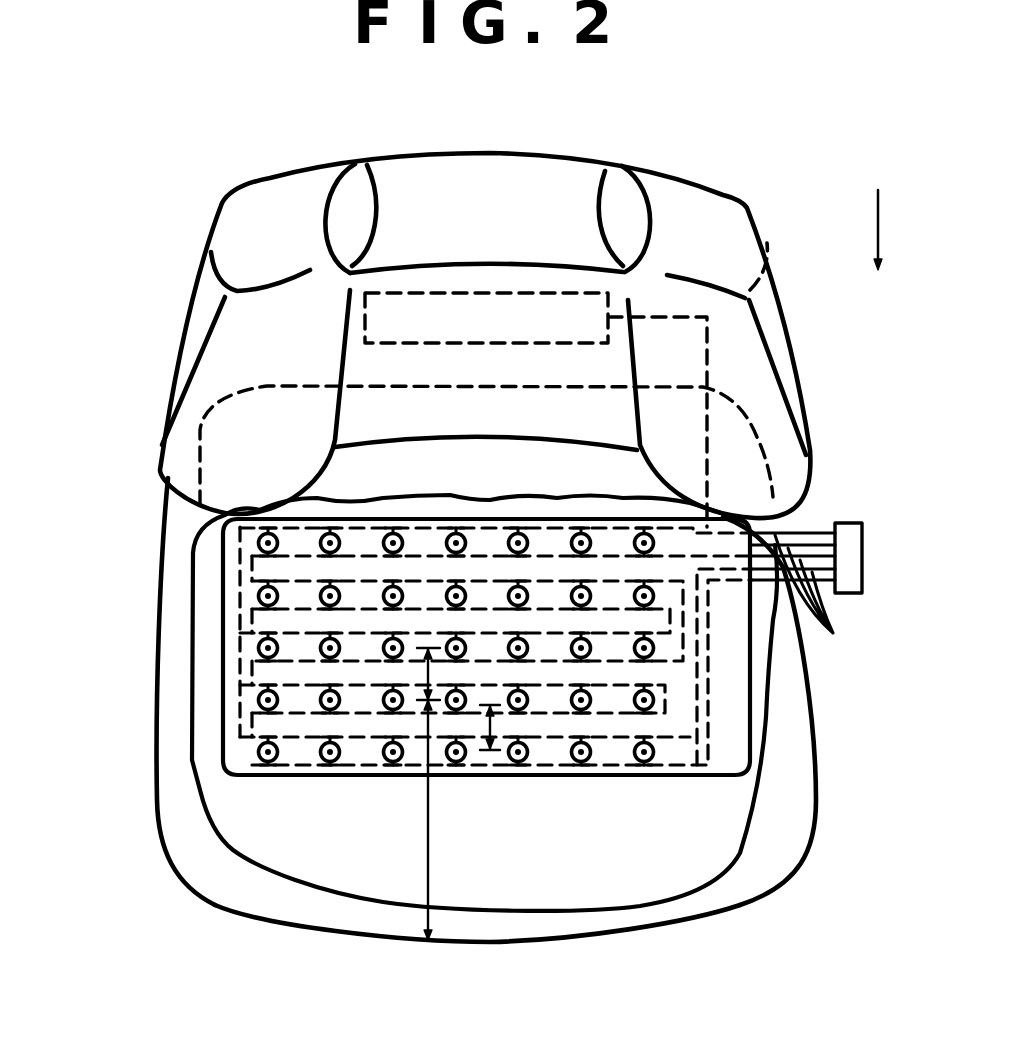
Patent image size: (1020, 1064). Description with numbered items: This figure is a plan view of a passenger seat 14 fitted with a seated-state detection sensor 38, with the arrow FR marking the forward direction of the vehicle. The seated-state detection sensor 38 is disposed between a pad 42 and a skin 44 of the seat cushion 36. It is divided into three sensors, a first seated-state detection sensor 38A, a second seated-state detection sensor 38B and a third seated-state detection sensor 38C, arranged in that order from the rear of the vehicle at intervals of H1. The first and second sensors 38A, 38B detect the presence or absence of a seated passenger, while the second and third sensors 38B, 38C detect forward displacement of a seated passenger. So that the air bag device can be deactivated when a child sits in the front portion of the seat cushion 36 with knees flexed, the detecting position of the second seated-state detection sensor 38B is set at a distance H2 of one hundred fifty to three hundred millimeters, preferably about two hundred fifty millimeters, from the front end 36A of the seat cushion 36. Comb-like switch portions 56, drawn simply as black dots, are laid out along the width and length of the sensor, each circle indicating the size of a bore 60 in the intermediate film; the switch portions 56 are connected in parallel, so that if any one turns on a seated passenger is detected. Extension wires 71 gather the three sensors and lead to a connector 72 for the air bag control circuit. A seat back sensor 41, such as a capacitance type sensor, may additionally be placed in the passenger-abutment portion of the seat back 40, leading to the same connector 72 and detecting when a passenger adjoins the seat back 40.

The passenger seat 14 is at (795, 345).
The seat back 40 is at (790, 366).
The seat back sensor 41 is at (522, 292).
The seat cushion 36 is at (815, 783).
The front end of the seat cushion 36A is at (607, 941).
The pad 42 is at (727, 838).
The skin 44 is at (798, 811).
The seated-state detection sensor 38 is at (83, 593).
The first seated-state detection sensor 38A is at (257, 545).
The second seated-state detection sensor 38B is at (257, 698).
The third seated-state detection sensor 38C is at (258, 750).
The switch portion 56 is at (586, 752).
The bore 60 is at (576, 752).
The extension wires 71 is at (818, 604).
The connector 72 is at (843, 525).
The interval H1 is at (428, 683).
The distance from front end H2 is at (427, 846).